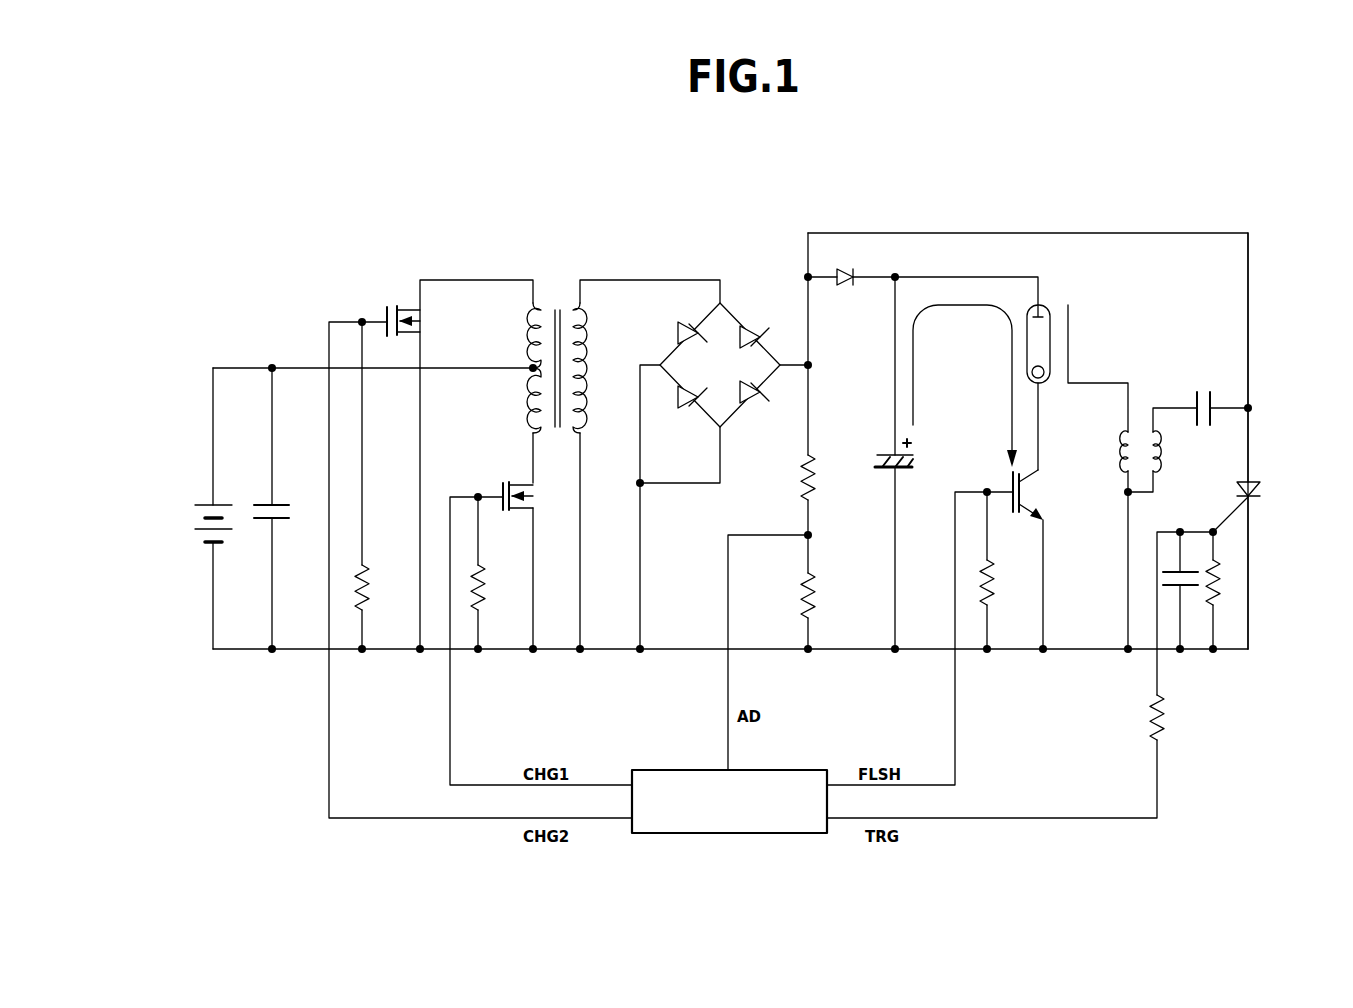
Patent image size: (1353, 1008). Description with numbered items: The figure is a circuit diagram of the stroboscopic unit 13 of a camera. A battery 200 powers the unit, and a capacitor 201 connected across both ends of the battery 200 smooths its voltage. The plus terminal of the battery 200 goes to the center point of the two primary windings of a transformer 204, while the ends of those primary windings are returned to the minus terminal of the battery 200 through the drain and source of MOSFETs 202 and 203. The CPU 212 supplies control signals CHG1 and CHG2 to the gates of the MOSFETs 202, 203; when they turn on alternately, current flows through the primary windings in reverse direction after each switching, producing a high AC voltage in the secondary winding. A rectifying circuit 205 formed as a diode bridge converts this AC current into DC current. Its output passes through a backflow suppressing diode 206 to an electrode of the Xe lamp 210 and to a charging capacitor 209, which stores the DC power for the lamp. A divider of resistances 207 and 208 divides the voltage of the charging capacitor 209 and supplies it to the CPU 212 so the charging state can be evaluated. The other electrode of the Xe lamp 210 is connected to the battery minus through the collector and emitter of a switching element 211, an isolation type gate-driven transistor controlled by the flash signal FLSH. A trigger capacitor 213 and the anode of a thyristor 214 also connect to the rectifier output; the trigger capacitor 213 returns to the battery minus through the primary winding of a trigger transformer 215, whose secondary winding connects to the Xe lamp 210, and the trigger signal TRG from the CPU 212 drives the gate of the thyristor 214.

The stroboscopic unit 13 is at (762, 222).
The battery 200 is at (207, 503).
The capacitor 201 is at (273, 503).
The MOSFET 202 is at (396, 306).
The MOSFET 203 is at (505, 482).
The transformer 204 is at (555, 303).
The rectifying circuit 205 is at (733, 322).
The backflow suppressing diode 206 is at (847, 284).
The resistance 207 is at (813, 494).
The resistance 208 is at (813, 588).
The charging capacitor 209 is at (880, 455).
The Xe lamp 210 is at (1050, 312).
The switching element 211 is at (1041, 489).
The CPU 212 is at (730, 834).
The trigger capacitor 213 is at (1200, 392).
The thyristor 214 is at (1262, 485).
The trigger transformer 215 is at (1140, 430).